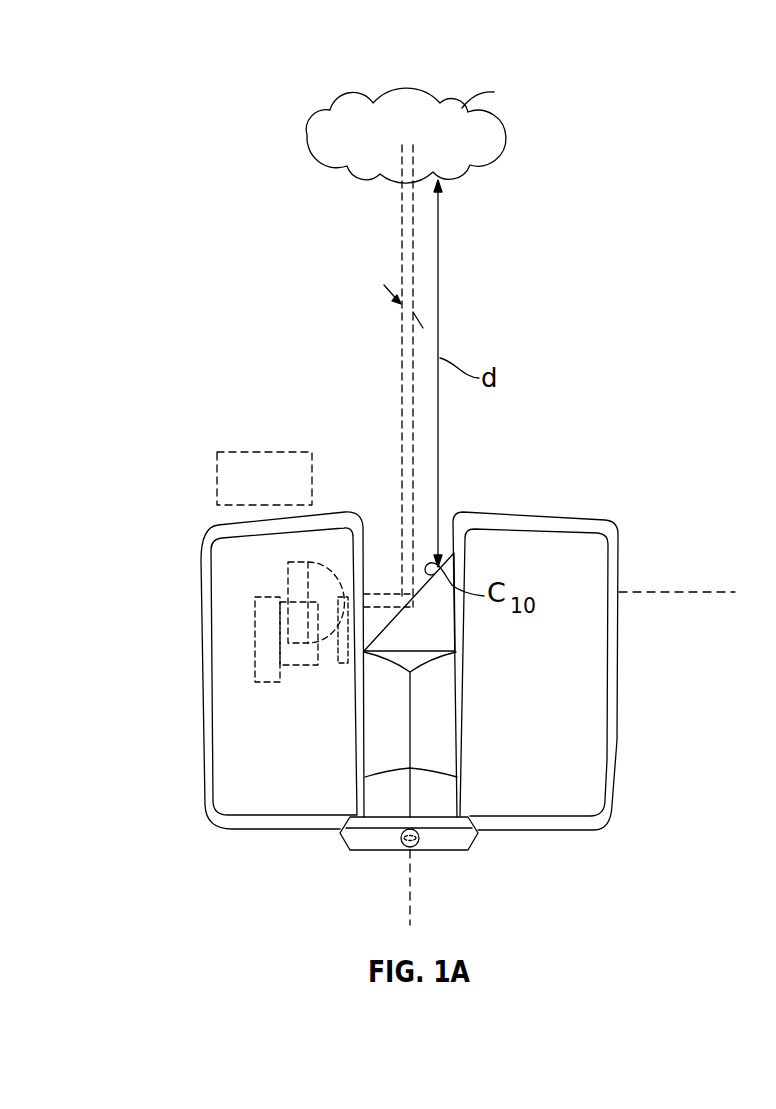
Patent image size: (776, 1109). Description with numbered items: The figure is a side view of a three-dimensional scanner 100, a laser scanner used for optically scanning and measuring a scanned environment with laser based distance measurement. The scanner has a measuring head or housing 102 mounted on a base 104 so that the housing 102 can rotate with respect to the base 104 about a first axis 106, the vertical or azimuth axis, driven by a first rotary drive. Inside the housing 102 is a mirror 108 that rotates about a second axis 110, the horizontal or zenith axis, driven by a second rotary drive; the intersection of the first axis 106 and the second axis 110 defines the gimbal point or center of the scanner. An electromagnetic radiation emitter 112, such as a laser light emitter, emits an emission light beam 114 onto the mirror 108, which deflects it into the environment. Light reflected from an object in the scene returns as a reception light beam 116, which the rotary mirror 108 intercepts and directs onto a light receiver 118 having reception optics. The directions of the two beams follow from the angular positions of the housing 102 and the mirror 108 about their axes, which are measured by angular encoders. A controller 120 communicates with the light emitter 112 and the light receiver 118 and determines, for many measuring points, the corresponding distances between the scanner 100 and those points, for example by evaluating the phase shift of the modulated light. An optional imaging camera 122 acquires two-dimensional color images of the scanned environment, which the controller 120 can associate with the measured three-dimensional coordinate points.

The 3D scanner 100 is at (276, 101).
The housing 102 is at (620, 737).
The base 104 is at (367, 850).
The first axis 106 is at (412, 890).
The mirror 108 is at (440, 620).
The second axis 110 is at (668, 592).
The electromagnetic radiation emitter 112 is at (340, 645).
The emission light beam 114 is at (412, 267).
The reception light beam 116 is at (400, 318).
The light receiver 118 is at (300, 585).
The controller 120 is at (262, 622).
The imaging camera 122 is at (217, 485).